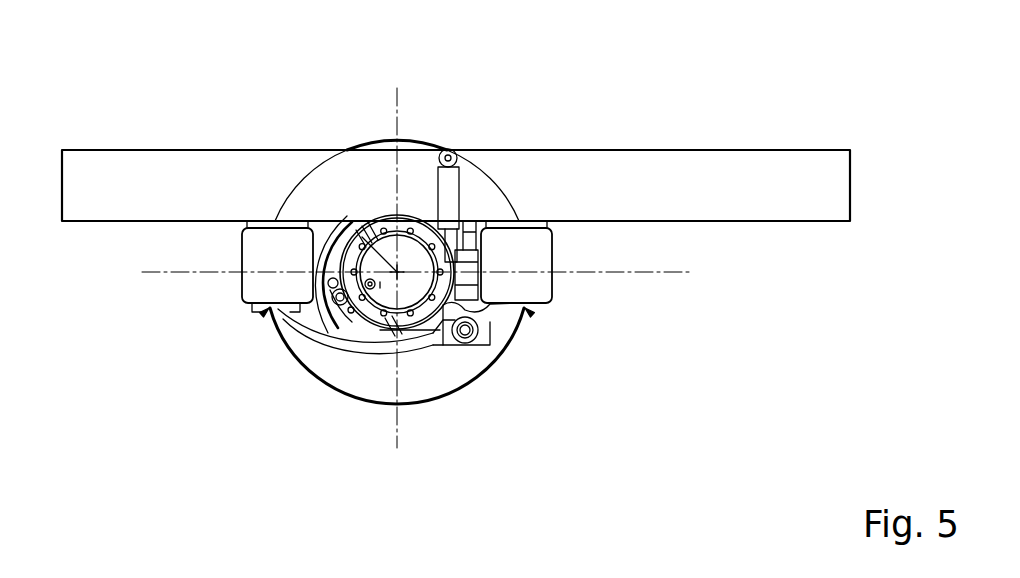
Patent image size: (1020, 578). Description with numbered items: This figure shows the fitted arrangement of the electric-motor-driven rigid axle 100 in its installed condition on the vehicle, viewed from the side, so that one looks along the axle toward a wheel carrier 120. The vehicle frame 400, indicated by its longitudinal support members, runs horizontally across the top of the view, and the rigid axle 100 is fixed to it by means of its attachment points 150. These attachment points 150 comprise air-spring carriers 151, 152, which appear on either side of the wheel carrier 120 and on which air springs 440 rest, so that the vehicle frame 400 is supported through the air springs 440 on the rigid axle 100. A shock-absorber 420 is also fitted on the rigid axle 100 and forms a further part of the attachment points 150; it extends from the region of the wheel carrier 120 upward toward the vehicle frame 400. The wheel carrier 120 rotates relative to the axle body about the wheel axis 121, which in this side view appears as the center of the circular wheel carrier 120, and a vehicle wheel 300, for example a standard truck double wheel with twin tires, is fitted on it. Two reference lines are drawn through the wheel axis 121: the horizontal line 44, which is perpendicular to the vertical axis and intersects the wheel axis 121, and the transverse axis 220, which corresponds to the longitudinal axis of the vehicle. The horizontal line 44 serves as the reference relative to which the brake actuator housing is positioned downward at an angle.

The horizontal line 44 is at (680, 273).
The rigid axle 100 is at (390, 285).
The wheel carrier 120 is at (423, 326).
The wheel axis 121 is at (355, 218).
The attachment points 150 is at (387, 328).
The air-spring carrier 151 is at (266, 311).
The air-spring carrier 152 is at (528, 311).
The transverse axis 220 is at (396, 110).
The vehicle wheel 300 is at (468, 363).
The vehicle frame 400 is at (650, 180).
The shock-absorber 420 is at (450, 192).
The air spring 440 is at (258, 250).